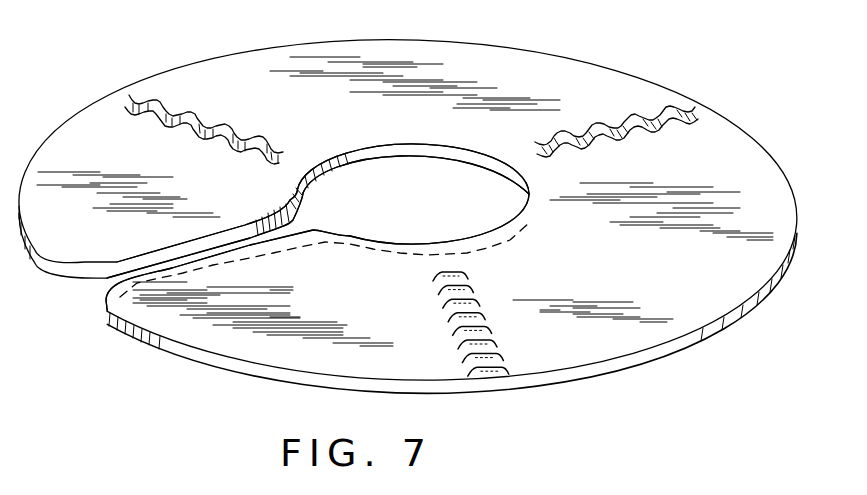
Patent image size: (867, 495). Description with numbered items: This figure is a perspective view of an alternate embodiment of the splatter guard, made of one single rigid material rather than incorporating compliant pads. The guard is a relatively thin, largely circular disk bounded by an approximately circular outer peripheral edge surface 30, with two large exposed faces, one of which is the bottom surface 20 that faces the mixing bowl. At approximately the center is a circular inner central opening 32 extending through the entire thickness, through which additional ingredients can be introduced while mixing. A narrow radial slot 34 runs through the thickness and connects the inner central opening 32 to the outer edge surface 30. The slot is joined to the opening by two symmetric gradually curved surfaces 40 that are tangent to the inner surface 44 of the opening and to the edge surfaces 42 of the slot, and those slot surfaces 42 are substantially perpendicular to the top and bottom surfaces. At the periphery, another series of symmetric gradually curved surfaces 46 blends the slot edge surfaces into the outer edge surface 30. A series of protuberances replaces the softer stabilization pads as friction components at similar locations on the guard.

The bottom surface 20 is at (408, 219).
The outer peripheral edge surface 30 is at (653, 360).
The inner central opening 32 is at (455, 172).
The narrow radial slot 34 is at (180, 262).
The gradually curved surfaces 40 is at (302, 210).
The edge surfaces of narrow radial slot 42 is at (133, 277).
The inner surface of central opening 44 is at (405, 184).
The gradually curved surfaces 46 is at (70, 295).